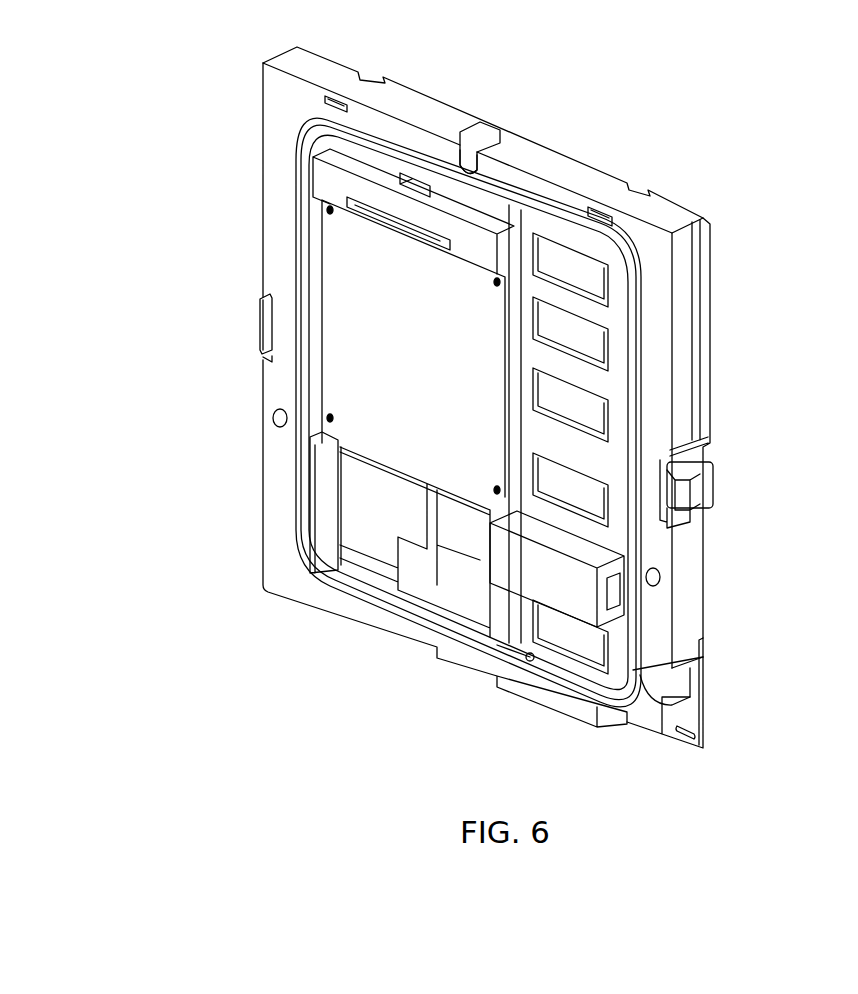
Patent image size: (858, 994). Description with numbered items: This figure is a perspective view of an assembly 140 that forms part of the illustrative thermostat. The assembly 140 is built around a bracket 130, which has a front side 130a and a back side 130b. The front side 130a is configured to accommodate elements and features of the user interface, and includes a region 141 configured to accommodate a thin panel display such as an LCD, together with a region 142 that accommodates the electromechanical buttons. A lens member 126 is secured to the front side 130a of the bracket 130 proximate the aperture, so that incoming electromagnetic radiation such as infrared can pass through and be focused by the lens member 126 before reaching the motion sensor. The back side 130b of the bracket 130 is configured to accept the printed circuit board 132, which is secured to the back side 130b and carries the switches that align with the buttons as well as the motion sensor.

The lens member 126 is at (567, 592).
The bracket 130 is at (673, 222).
The front side 130a is at (236, 318).
The back side 130b is at (440, 94).
The printed circuit board 132 is at (704, 690).
The assembly 140 is at (606, 86).
The region 141 is at (345, 250).
The region 142 is at (618, 168).